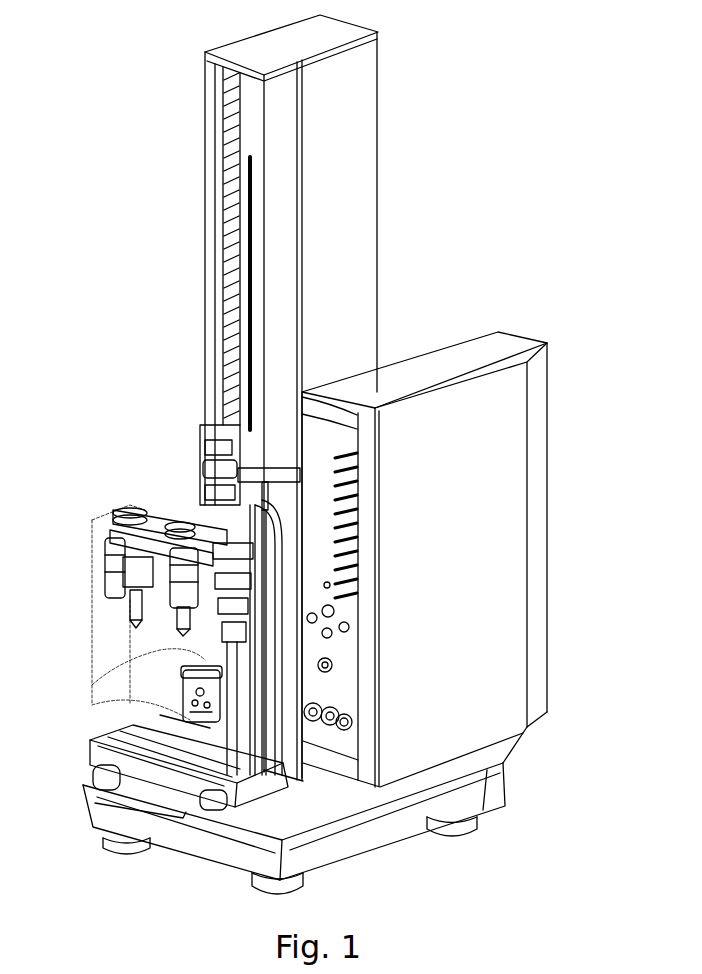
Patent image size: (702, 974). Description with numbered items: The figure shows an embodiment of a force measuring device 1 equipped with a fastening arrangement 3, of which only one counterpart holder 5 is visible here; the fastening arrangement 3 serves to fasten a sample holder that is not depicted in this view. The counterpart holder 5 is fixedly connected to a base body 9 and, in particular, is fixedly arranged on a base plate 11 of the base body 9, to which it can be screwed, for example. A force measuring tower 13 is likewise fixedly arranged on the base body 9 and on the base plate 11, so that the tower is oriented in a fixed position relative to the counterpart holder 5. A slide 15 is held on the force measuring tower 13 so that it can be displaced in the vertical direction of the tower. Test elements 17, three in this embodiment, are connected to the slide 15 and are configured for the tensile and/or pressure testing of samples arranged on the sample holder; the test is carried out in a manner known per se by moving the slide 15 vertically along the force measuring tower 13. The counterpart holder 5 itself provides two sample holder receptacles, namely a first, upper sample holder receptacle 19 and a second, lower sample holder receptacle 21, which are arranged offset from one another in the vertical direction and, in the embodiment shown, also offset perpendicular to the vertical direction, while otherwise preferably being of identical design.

The force measuring device 1 is at (130, 63).
The fastening arrangement 3 is at (171, 694).
The counterpart holder 5 is at (198, 690).
The base body 9 is at (453, 809).
The base plate 11 is at (487, 778).
The force measuring tower 13 is at (377, 101).
The slide 15 is at (207, 428).
The test element 17 is at (131, 614).
The first, upper sample holder receptacle 19 is at (207, 642).
The second, lower sample holder receptacle 21 is at (92, 773).